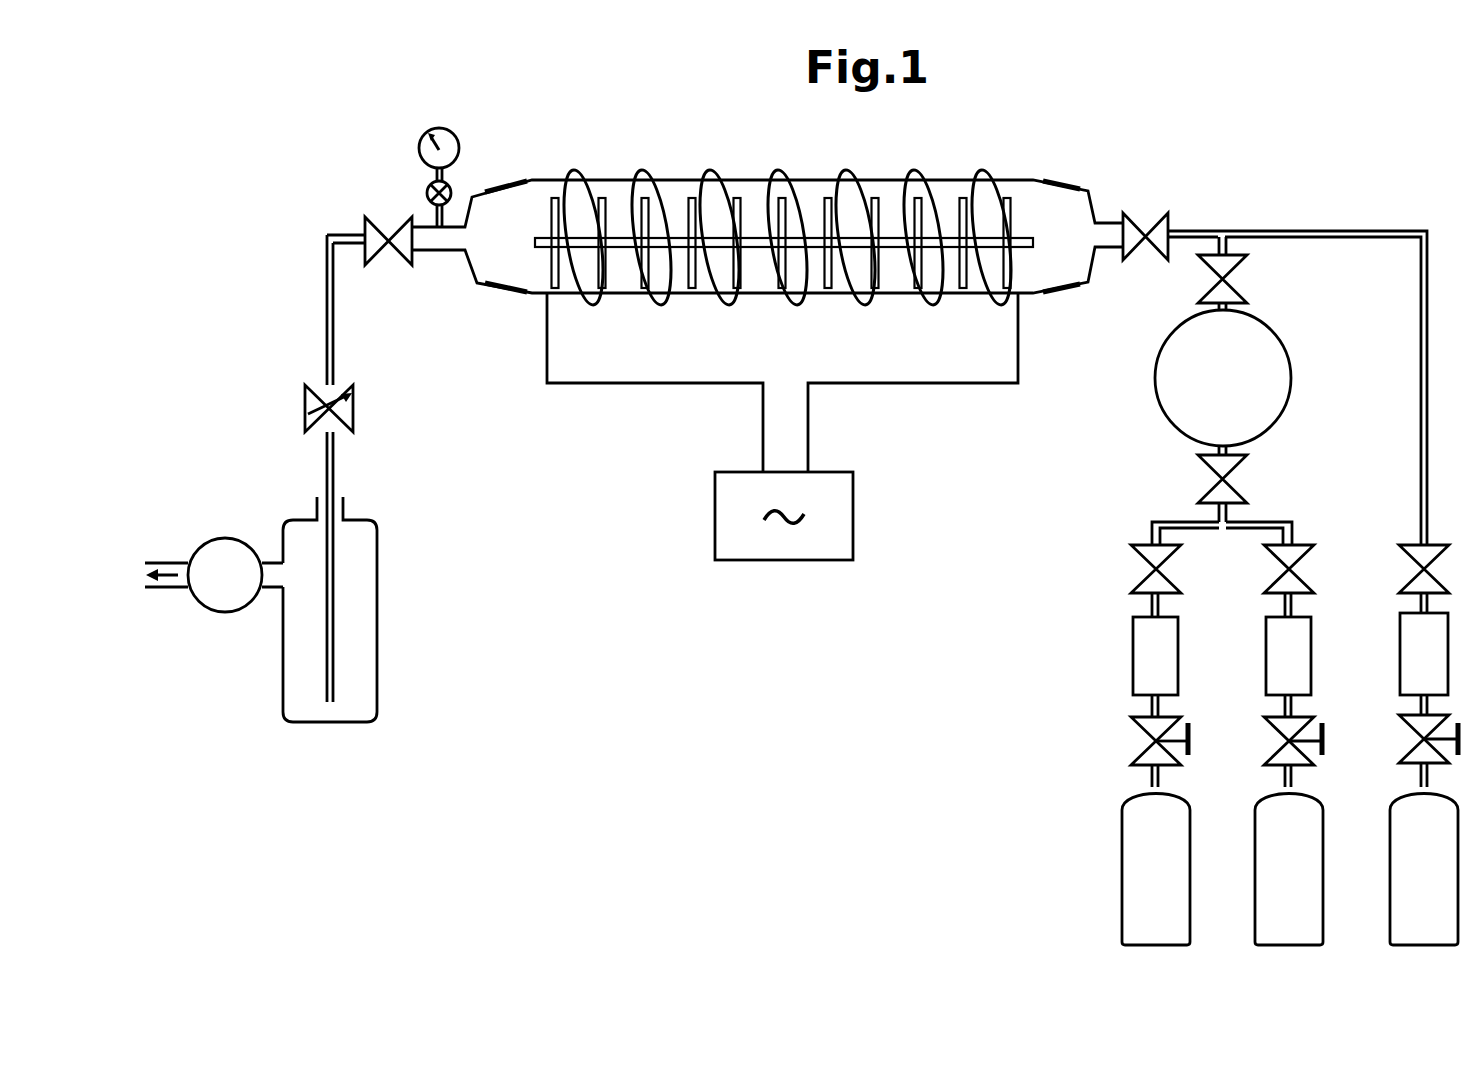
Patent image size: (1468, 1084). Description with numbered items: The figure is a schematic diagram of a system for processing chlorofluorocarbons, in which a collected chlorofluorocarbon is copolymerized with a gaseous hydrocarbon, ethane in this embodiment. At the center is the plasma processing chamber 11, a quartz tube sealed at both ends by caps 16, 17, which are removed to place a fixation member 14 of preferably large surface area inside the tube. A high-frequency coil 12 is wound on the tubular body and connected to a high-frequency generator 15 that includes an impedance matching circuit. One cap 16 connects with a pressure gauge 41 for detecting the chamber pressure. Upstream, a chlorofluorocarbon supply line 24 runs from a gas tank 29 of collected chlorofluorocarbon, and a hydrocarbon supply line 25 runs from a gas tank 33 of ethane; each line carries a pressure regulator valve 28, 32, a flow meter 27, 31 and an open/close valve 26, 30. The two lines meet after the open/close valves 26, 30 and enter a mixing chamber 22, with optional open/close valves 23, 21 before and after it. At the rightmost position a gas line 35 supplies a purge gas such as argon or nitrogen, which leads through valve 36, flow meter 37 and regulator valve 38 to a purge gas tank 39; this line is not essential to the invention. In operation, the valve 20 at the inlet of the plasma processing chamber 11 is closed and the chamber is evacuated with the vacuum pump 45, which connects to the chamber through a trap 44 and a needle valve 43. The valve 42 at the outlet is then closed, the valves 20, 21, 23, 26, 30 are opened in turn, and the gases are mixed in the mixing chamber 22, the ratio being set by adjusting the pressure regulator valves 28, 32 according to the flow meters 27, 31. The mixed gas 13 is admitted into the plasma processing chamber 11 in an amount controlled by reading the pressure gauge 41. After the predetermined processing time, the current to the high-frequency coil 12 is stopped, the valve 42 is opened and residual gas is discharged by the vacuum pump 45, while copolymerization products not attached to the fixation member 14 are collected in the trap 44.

The plasma processing chamber 11 is at (612, 180).
The high-frequency coil 12 is at (675, 297).
The mixed gas 13 is at (753, 193).
The fixation member 14 is at (963, 190).
The high-frequency generator 15 is at (853, 525).
The cap 16 is at (503, 181).
The cap 17 is at (1057, 178).
The valve 20 is at (1138, 212).
The open/close valve 21 is at (1245, 292).
The mixing chamber 22 is at (1292, 378).
The open/close valve 23 is at (1200, 472).
The chlorofluorocarbon supply line 24 is at (1155, 522).
The hydrocarbon supply line 25 is at (1292, 522).
The open/close valve 26 is at (1150, 570).
The flow meter 27 is at (1133, 660).
The pressure regulator valve 28 is at (1150, 730).
The gas tank 29 is at (1124, 908).
The open/close valve 30 is at (1272, 570).
The flow meter 31 is at (1266, 660).
The pressure regulator valve 32 is at (1283, 730).
The gas tank 33 is at (1257, 908).
The gas line 35 is at (1352, 231).
The valve 36 is at (1415, 570).
The flow meter 37 is at (1400, 658).
The cylinder valve 38 is at (1415, 730).
The purge gas cylinder 39 is at (1392, 908).
The pressure gauge 41 is at (418, 148).
The valve 42 is at (400, 257).
The needle valve 43 is at (347, 420).
The trap 44 is at (377, 583).
The vacuum pump 45 is at (218, 610).